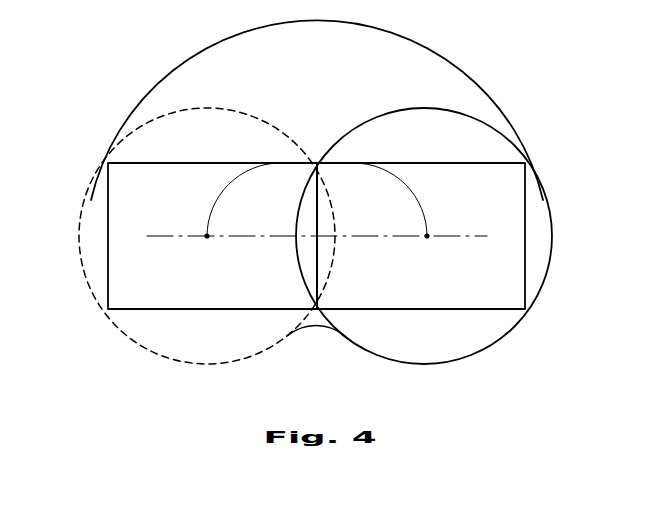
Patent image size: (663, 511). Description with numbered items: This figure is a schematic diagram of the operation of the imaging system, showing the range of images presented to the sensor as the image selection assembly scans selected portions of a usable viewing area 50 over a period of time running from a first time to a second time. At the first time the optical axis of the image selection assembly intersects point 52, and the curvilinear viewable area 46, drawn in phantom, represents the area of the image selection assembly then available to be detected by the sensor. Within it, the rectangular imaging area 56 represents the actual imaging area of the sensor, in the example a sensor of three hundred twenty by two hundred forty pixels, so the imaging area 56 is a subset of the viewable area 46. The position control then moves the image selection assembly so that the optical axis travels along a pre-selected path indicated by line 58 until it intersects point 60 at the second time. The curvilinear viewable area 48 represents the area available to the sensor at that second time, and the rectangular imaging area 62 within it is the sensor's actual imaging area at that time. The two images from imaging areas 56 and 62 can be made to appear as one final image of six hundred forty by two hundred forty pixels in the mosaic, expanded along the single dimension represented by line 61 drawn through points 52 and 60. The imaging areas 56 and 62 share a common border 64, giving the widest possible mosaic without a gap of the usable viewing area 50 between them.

The viewable area 46 is at (222, 107).
The viewable area 48 is at (420, 106).
The usable viewing area 50 is at (417, 42).
The point 52 is at (207, 236).
The rectangular imaging area 56 is at (170, 164).
The line 58 is at (404, 186).
The point 60 is at (427, 236).
The line 61 is at (377, 240).
The rectangular imaging area 62 is at (317, 212).
The common border 64 is at (324, 278).